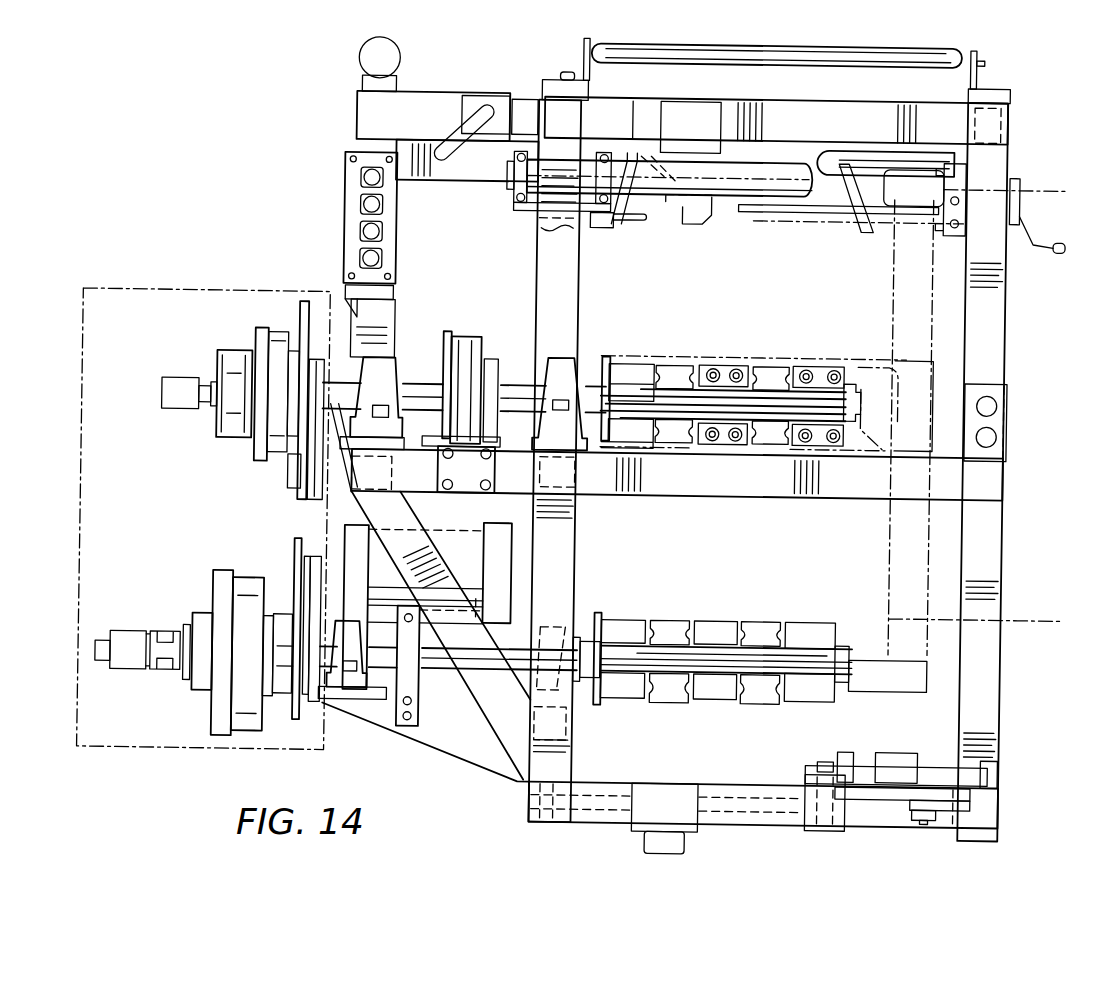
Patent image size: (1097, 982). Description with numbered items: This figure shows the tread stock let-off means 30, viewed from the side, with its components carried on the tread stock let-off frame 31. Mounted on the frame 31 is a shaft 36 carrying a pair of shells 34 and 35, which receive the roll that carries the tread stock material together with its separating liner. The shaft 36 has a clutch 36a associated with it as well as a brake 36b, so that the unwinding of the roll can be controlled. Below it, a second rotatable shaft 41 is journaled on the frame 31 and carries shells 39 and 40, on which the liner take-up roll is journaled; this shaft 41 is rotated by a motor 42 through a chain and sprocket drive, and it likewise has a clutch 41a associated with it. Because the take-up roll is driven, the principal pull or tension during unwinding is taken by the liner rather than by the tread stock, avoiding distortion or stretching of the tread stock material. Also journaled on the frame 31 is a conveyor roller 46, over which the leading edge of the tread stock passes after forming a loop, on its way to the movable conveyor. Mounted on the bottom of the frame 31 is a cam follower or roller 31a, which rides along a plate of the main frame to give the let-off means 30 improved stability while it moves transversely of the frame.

The tread stock let-off means 30 is at (1018, 336).
The tread stock let-off frame 31 is at (1002, 553).
The cam follower or roller 31a is at (688, 850).
The shell 34 is at (605, 356).
The shell 35 is at (845, 380).
The shaft 36 is at (522, 385).
The clutch 36a is at (262, 332).
The brake 36b is at (468, 334).
The shell 39 is at (598, 612).
The shell 40 is at (846, 640).
The rotatable shaft 41 is at (450, 665).
The clutch 41a is at (224, 575).
The motor 42 is at (464, 540).
The conveyor roller 46 is at (852, 64).